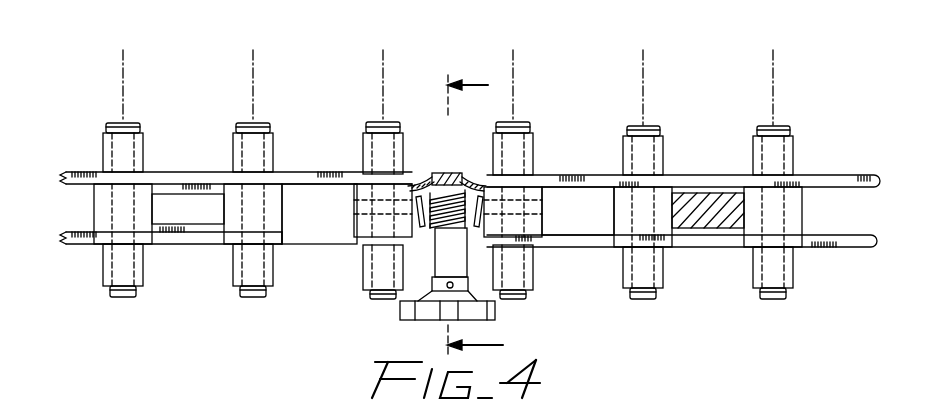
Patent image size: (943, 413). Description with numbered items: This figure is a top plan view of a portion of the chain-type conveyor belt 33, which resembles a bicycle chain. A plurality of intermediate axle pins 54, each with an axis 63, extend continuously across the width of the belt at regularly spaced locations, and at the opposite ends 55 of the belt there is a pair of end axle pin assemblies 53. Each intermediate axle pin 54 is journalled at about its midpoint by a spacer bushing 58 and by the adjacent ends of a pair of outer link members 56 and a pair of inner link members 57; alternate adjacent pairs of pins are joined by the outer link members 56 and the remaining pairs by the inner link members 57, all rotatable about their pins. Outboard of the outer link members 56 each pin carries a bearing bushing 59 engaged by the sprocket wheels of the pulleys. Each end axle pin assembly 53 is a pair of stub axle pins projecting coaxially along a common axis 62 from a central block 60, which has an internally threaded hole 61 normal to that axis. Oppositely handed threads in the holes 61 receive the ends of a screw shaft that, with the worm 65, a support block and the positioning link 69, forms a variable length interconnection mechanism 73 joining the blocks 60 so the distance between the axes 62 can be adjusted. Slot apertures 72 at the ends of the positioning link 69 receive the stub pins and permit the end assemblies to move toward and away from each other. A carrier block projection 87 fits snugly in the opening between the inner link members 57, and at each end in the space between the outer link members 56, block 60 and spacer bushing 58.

The conveyor belt 33 is at (632, 58).
The end axle pin assembly 53 is at (374, 123).
The intermediate axle pin 54 is at (108, 124).
The belt end 55 is at (363, 262).
The outer link member 56 is at (285, 184).
The inner link member 57 is at (196, 185).
The spacer bushing 58 is at (804, 215).
The bearing bushing 59 is at (364, 156).
The central block 60 is at (356, 192).
The internally threaded hole 61 is at (356, 213).
The common axis of the stub axle pins 62 is at (386, 84).
The axis of intermediate axle pin 63 is at (127, 79).
The worm 65 is at (452, 193).
The positioning link 69 is at (438, 173).
The slot aperture 72 is at (411, 184).
The variable length interconnection mechanism 73 is at (396, 330).
The projection 87 is at (727, 191).